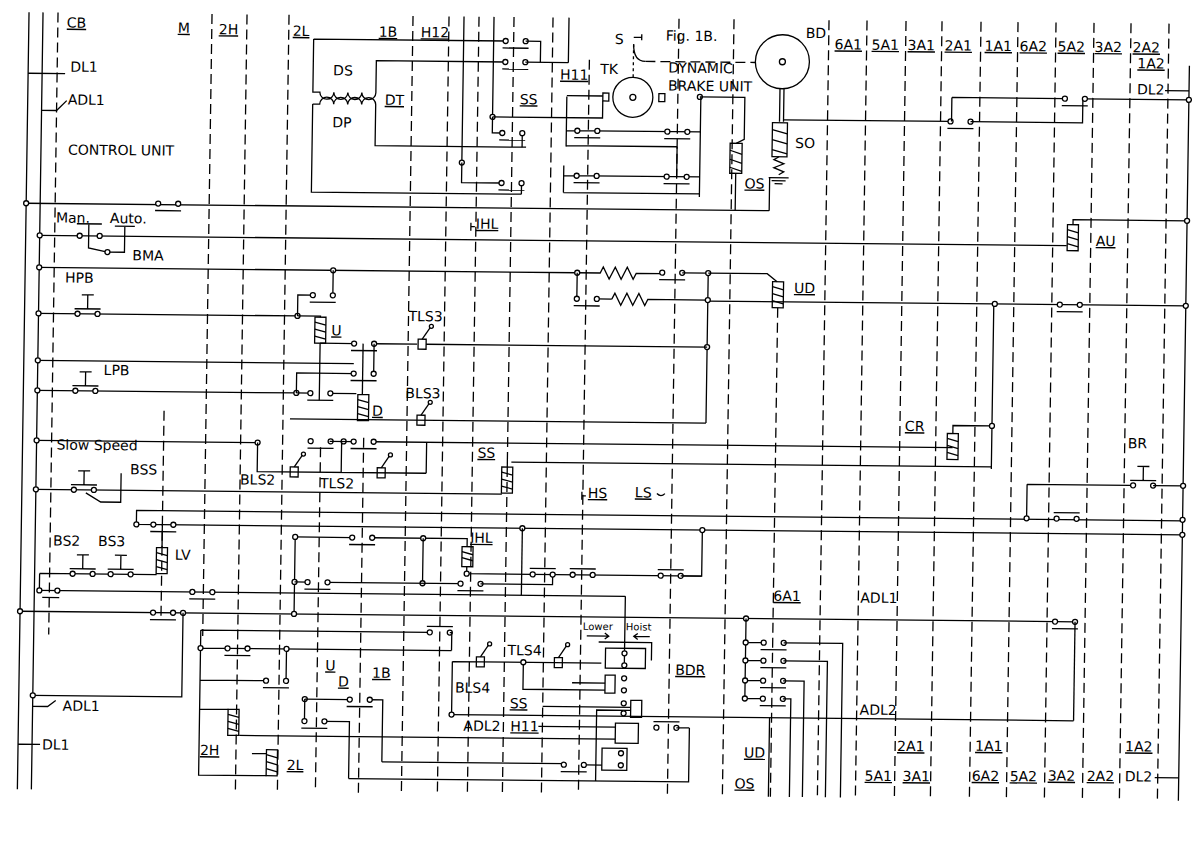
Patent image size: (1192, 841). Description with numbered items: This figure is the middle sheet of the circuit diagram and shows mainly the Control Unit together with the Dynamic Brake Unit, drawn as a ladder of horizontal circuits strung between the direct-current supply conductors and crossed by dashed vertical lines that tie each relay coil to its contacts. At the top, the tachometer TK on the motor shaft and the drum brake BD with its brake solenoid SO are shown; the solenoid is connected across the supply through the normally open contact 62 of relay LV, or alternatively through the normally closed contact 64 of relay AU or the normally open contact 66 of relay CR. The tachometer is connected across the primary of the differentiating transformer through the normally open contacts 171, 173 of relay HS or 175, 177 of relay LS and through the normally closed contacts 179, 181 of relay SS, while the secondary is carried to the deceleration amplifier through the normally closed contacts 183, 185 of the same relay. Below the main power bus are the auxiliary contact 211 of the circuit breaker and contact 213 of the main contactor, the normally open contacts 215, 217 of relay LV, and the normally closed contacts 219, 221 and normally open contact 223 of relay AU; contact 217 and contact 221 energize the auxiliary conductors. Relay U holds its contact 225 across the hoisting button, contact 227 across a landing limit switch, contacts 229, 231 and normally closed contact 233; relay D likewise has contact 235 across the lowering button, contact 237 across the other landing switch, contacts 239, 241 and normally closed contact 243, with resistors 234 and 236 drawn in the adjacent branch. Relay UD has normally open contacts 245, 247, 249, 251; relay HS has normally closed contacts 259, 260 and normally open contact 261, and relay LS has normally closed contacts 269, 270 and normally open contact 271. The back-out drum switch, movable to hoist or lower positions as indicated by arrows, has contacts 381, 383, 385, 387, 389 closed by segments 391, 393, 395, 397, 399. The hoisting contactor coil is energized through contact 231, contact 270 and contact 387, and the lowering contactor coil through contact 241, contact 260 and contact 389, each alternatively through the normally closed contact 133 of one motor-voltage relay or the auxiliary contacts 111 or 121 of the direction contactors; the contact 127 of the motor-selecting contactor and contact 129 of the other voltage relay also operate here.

The normally open contact 62 is at (166, 197).
The normally closed contact 64 is at (1072, 96).
The normally open contact 66 is at (1014, 113).
The auxiliary normally open contact 111 is at (227, 660).
The auxiliary normally open contact 121 is at (290, 675).
The normally open contact 127 is at (505, 592).
The normally closed contact 129 is at (551, 559).
The normally closed contact 133 is at (458, 632).
The normally open contact 171 is at (601, 138).
The normally open contact 173 is at (602, 182).
The normally open contact 175 is at (661, 139).
The normally open contact 177 is at (665, 169).
The normally closed contact 179 is at (522, 134).
The normally closed contact 181 is at (506, 181).
The normally closed contact 183 is at (528, 50).
The normally closed contact 185 is at (535, 71).
The normally open contact 211 is at (69, 598).
The normally open contact 213 is at (210, 582).
The normally open contact 215 is at (174, 534).
The normally open contact 217 is at (143, 616).
The normally closed contact 219 is at (1084, 509).
The normally closed contact 221 is at (1043, 659).
The normally open contact 223 is at (1088, 316).
The normally open contact 225 is at (334, 291).
The normally open contact 227 is at (308, 433).
The normally open contact 229 is at (377, 574).
The normally open contact 231 is at (314, 737).
The normally closed contact 233 is at (319, 400).
The resistor 234 is at (659, 309).
The normally open contact 235 is at (346, 368).
The resistor 236 is at (620, 262).
The normally open contact 237 is at (639, 436).
The normally open contact 239 is at (381, 548).
The normally open contact 241 is at (343, 729).
The normally closed contact 243 is at (368, 335).
The normally open contact 245 is at (800, 713).
The normally open contact 247 is at (792, 722).
The normally open contact 249 is at (784, 732).
The normally open contact 251 is at (759, 746).
The normally closed contact 259 is at (600, 563).
The normally closed contact 260 is at (492, 770).
The normally open contact 261 is at (585, 296).
The normally closed contact 269 is at (681, 552).
The normally closed contact 270 is at (687, 732).
The normally open contact 271 is at (687, 265).
The back-out switch contact 381 is at (650, 660).
The back-out switch contact 383 is at (640, 692).
The back-out switch contact 385 is at (587, 708).
The back-out switch contact 387 is at (576, 727).
The back-out switch contact 389 is at (640, 758).
The segment 391 is at (652, 645).
The segment 393 is at (580, 683).
The segment 395 is at (650, 708).
The segment 397 is at (640, 725).
The segment 399 is at (640, 768).